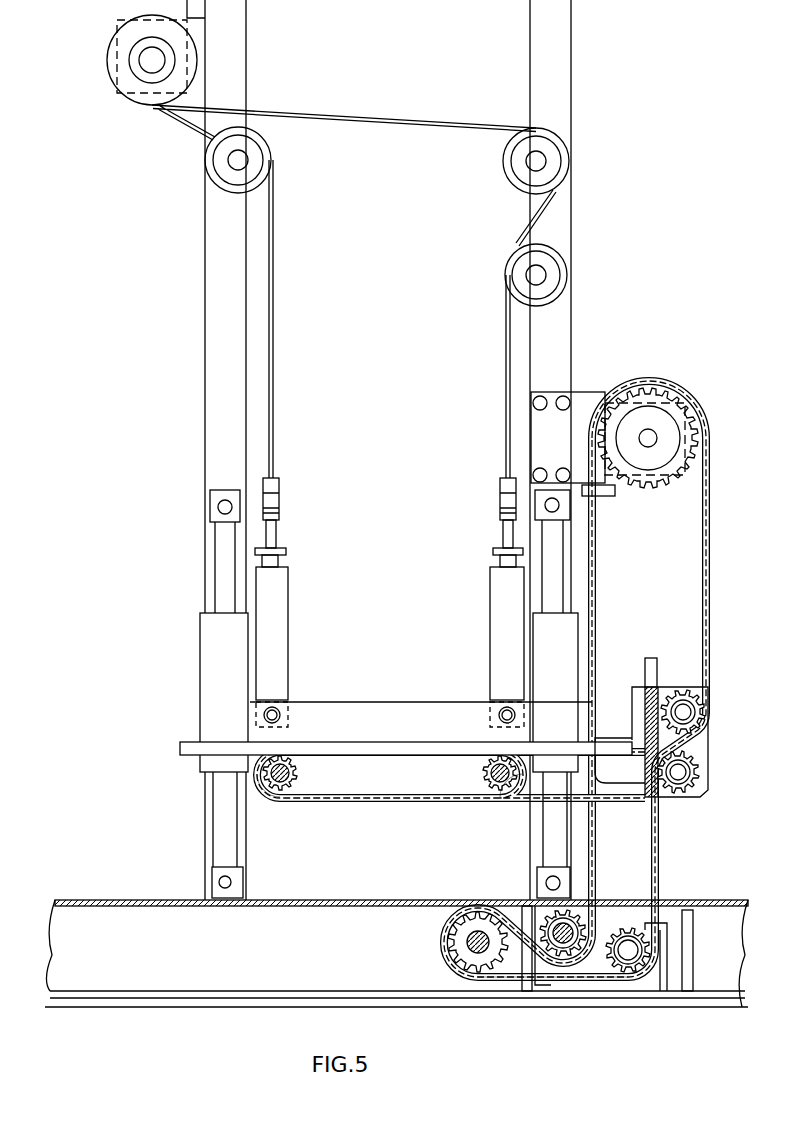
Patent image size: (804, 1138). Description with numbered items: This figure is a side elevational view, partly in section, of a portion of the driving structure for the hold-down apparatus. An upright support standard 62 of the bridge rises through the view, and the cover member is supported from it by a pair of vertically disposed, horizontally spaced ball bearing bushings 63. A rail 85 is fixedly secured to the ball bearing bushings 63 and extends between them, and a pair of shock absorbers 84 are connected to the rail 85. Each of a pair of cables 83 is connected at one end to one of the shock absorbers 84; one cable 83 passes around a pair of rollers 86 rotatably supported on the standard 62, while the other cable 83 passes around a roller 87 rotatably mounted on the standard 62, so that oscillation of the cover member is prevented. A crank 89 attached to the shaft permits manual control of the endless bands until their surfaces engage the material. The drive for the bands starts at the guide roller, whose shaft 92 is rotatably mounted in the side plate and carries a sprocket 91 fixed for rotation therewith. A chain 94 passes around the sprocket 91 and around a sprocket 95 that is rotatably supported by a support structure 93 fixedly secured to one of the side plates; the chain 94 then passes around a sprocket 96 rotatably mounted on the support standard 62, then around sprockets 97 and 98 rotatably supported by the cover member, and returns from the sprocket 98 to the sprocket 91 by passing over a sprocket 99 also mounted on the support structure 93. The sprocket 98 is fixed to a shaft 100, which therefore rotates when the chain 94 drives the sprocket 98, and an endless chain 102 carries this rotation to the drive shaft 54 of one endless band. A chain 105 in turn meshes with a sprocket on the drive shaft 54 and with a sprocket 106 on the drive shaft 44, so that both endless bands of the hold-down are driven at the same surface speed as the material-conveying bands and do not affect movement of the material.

The upright support standard 62 is at (571, 52).
The ball bearing bushings 63 is at (200, 652).
The cables 83 is at (273, 265).
The shock absorber 84 is at (490, 603).
The rail 85 is at (362, 700).
The rollers 86 is at (510, 255).
The roller 87 is at (206, 163).
The crank 89 is at (117, 57).
The sprocket 91 is at (468, 960).
The shaft 92 is at (470, 942).
The support structure 93 is at (668, 960).
The chain 94 is at (508, 978).
The sprocket 95 is at (582, 932).
The sprocket 96 is at (688, 430).
The sprocket 97 is at (708, 700).
The sprocket 98 is at (700, 768).
The sprocket 99 is at (626, 965).
The shaft 100 is at (680, 782).
The endless chain 102 is at (523, 800).
The chain 105 is at (347, 802).
The sprocket 106 is at (298, 802).
The drive shaft 44 is at (292, 786).
The drive shaft 54 is at (482, 776).